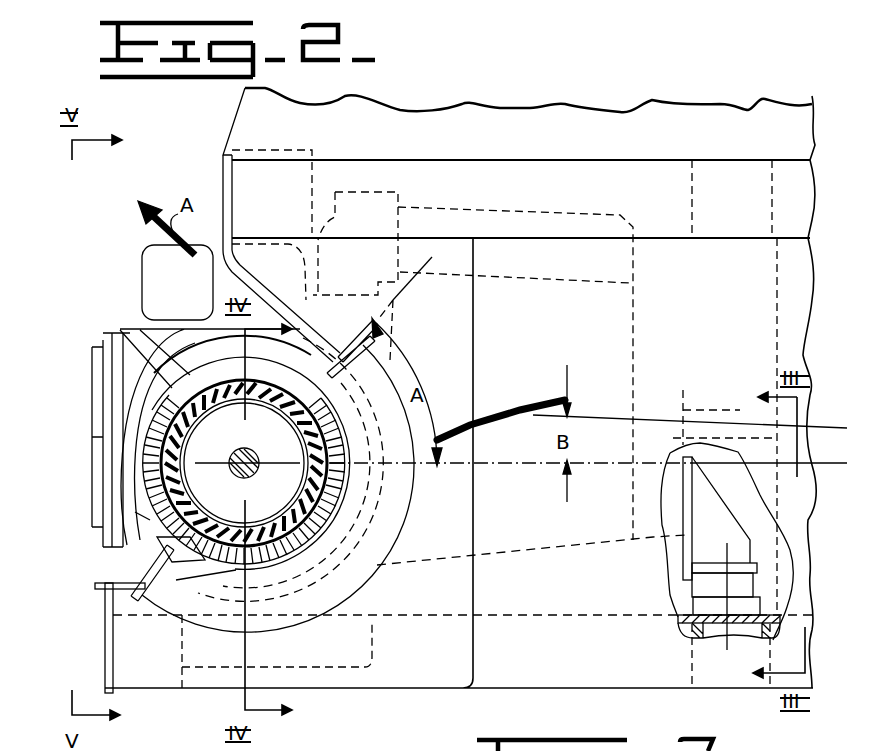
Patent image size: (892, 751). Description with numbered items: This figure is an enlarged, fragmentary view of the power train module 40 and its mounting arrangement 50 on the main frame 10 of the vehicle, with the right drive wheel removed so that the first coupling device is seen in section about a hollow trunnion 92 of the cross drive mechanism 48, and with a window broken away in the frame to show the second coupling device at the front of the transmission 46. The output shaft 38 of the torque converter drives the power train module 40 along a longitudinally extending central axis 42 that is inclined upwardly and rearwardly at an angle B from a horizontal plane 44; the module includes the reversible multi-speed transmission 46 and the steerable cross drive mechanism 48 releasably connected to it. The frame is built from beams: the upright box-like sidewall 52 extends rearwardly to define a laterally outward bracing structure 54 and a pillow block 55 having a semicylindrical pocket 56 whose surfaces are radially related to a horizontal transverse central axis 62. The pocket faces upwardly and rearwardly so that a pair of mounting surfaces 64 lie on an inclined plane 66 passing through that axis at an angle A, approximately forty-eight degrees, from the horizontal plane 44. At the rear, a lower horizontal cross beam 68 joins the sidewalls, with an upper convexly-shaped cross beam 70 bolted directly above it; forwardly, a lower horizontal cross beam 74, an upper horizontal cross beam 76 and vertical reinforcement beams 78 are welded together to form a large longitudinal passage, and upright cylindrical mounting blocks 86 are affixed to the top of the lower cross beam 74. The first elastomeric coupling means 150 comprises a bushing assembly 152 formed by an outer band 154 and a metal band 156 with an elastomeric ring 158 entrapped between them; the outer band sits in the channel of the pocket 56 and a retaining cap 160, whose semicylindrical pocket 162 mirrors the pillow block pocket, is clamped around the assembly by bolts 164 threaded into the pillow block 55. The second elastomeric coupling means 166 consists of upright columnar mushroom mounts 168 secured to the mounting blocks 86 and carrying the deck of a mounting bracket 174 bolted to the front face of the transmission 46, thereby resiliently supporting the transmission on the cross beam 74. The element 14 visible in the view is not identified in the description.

The main frame 10 is at (104, 646).
The housing 14 is at (248, 108).
The output shaft 38 is at (735, 420).
The power train module 40 is at (508, 210).
The central axis 42 is at (562, 400).
The horizontal plane 44 is at (566, 472).
The transmission 46 is at (528, 570).
The cross drive mechanism 48 is at (395, 592).
The mounting arrangement 50 is at (118, 300).
The sidewall 52 is at (478, 196).
The bracing structure 54 is at (402, 498).
The pillow block 55 is at (280, 562).
The semicylindrical pocket 56 is at (305, 560).
The central axis 62 is at (250, 450).
The mounting surfaces 64 is at (135, 580).
The inclined plane 66 is at (445, 265).
The lower horizontal cross beam 68 is at (182, 675).
The upper convexly-shaped cross beam 70 is at (322, 180).
The lower horizontal cross beam 74 is at (680, 632).
The upper horizontal cross beam 76 is at (680, 180).
The vertical reinforcement beams 78 is at (798, 312).
The mounting blocks 86 is at (700, 603).
The hollow trunnions 92 is at (232, 455).
The first elastomeric coupling means 150 is at (140, 560).
The bushing assembly 152 is at (145, 463).
The outer band 154 is at (140, 483).
The metal band 156 is at (305, 500).
The elastomeric ring 158 is at (110, 338).
The retaining cap 160 is at (175, 385).
The semicylindrical pocket 162 is at (212, 362).
The bolts 164 is at (312, 292).
The second elastomeric coupling means 166 is at (683, 558).
The mushroom mounts 168 is at (700, 583).
The mounting bracket 174 is at (735, 534).